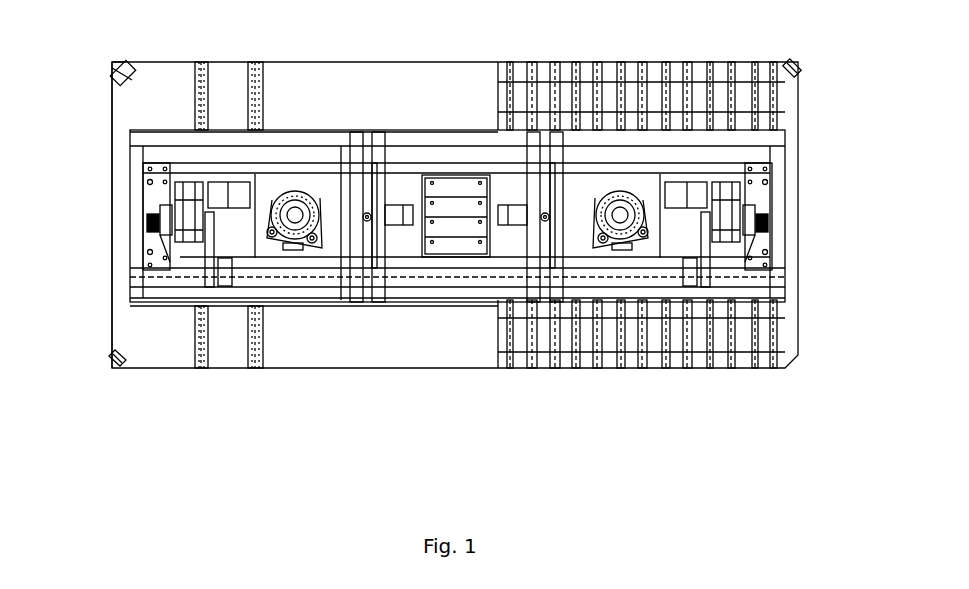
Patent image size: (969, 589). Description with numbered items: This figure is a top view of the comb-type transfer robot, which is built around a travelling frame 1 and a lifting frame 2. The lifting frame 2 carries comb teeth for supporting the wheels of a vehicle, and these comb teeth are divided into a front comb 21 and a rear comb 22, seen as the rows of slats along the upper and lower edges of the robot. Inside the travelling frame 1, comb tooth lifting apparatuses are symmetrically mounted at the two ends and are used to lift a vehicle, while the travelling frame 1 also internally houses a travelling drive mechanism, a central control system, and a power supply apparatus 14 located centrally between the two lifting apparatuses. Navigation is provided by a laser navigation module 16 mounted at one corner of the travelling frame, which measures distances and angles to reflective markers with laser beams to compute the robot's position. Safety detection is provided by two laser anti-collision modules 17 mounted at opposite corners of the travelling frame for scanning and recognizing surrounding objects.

The travelling frame 1 is at (160, 153).
The lifting frame 2 is at (327, 130).
The power supply apparatus 14 is at (462, 222).
The laser navigation module 16 is at (118, 62).
The laser anti-collision module 17 is at (805, 65).
The front comb 21 is at (246, 340).
The rear comb 22 is at (643, 353).